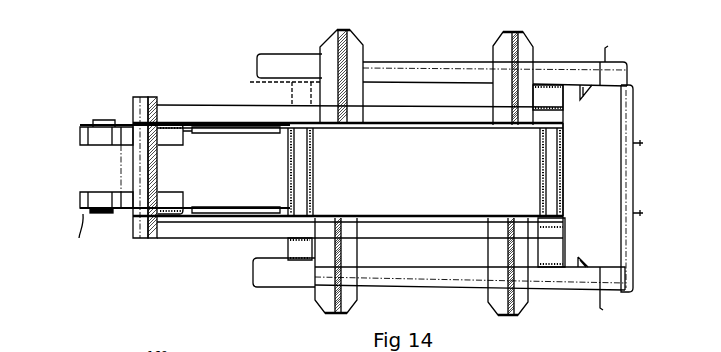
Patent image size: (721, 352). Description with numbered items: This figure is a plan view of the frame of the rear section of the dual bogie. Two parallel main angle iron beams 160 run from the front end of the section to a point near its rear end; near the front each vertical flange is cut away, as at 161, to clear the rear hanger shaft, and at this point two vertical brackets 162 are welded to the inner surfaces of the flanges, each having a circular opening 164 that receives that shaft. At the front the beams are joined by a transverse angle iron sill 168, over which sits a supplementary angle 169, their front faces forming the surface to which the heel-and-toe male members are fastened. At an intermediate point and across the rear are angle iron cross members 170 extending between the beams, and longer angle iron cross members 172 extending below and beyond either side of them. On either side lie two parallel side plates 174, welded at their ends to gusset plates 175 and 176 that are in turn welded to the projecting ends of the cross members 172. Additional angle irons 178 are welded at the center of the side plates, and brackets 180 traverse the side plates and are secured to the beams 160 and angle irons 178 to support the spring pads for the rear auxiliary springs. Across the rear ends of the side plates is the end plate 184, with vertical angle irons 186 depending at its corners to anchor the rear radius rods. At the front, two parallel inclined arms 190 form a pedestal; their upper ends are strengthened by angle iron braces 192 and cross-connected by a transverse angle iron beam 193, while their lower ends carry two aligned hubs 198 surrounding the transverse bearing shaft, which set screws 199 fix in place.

The main angle iron beams 160 is at (440, 128).
The cut away 161 is at (186, 351).
The vertical brackets 162 is at (263, 134).
The circular openings 164 is at (273, 347).
The transverse angle iron sill 168 is at (160, 97).
The supplementary angle 169 is at (142, 97).
The angle iron cross members 170 is at (313, 180).
The longer angle iron cross members 172 is at (288, 246).
The side plates 174 is at (440, 62).
The gusset plate 175 is at (257, 74).
The gusset plate 176 is at (576, 62).
The angle irons 178 is at (459, 82).
The brackets 180 is at (533, 56).
The end plate 184 is at (636, 168).
The vertical angle irons 186 is at (583, 262).
The arms 190 is at (72, 234).
The angle iron braces 192 is at (183, 197).
The transverse angle iron beam 193 is at (119, 165).
The hubs 198 is at (80, 138).
The set screws 199 is at (80, 200).